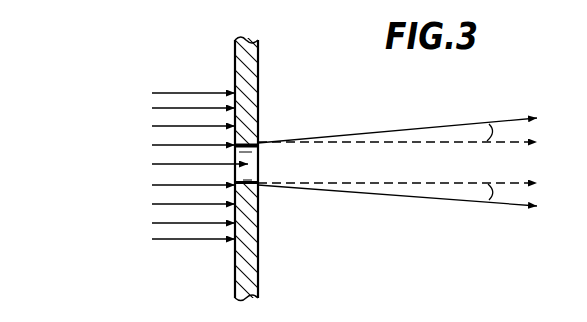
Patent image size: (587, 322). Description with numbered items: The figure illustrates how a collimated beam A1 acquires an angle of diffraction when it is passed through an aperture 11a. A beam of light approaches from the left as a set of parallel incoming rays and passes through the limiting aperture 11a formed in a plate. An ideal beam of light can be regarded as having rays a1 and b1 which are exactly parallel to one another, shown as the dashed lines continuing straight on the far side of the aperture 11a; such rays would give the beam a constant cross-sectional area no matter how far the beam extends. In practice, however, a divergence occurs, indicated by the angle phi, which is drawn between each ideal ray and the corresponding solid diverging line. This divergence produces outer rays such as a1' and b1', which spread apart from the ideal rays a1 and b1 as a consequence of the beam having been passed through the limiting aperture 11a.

The aperture 11a is at (249, 178).
The collimated beam A1 is at (150, 166).
The ray a1 is at (397, 161).
The outer ray a1' is at (397, 112).
The ray b1 is at (397, 217).
The outer ray b1' is at (397, 216).
The angle of diffraction phi is at (490, 130).